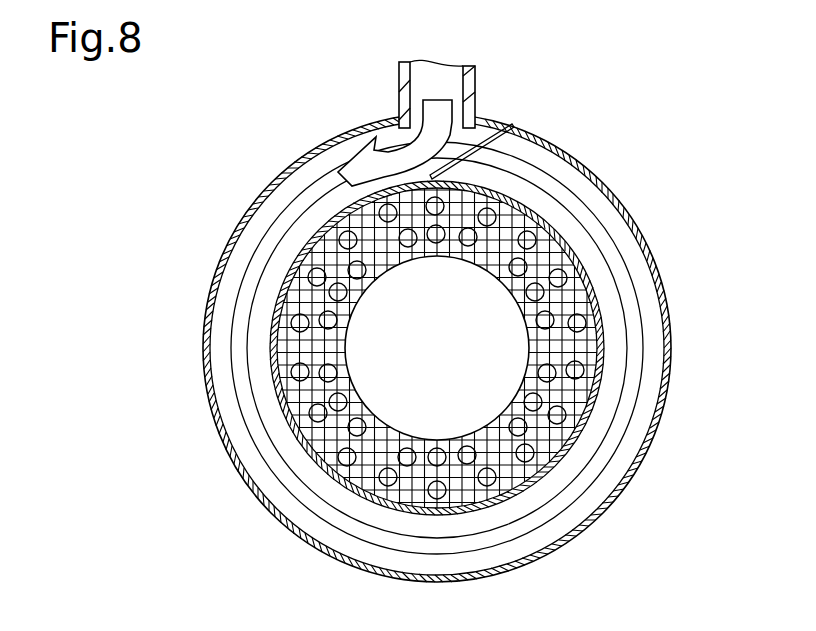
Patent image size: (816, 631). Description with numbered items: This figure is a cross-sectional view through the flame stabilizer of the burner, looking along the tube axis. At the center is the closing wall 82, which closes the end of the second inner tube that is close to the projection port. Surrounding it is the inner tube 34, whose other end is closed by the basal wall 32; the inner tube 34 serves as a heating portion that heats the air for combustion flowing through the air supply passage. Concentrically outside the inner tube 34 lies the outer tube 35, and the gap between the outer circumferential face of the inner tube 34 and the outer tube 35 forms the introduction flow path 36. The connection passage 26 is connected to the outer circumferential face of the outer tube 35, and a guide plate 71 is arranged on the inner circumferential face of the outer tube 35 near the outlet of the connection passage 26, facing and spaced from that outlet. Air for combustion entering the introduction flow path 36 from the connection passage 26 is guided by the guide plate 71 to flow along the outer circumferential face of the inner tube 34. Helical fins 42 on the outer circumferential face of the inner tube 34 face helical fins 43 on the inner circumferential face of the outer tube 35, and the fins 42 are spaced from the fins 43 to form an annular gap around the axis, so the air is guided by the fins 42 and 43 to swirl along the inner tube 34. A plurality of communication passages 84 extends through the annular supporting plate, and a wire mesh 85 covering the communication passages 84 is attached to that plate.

The connection passage 26 is at (478, 84).
The guide plate 71 is at (506, 127).
The basal wall 32 is at (560, 188).
The inner tube 34 is at (665, 307).
The outer tube 35 is at (632, 211).
The introduction flow path 36 is at (603, 453).
The fins 42 is at (603, 415).
The fins 43 is at (652, 393).
The closing wall 82 is at (393, 422).
The communication passages 84 is at (297, 262).
The wire mesh 85 is at (278, 292).